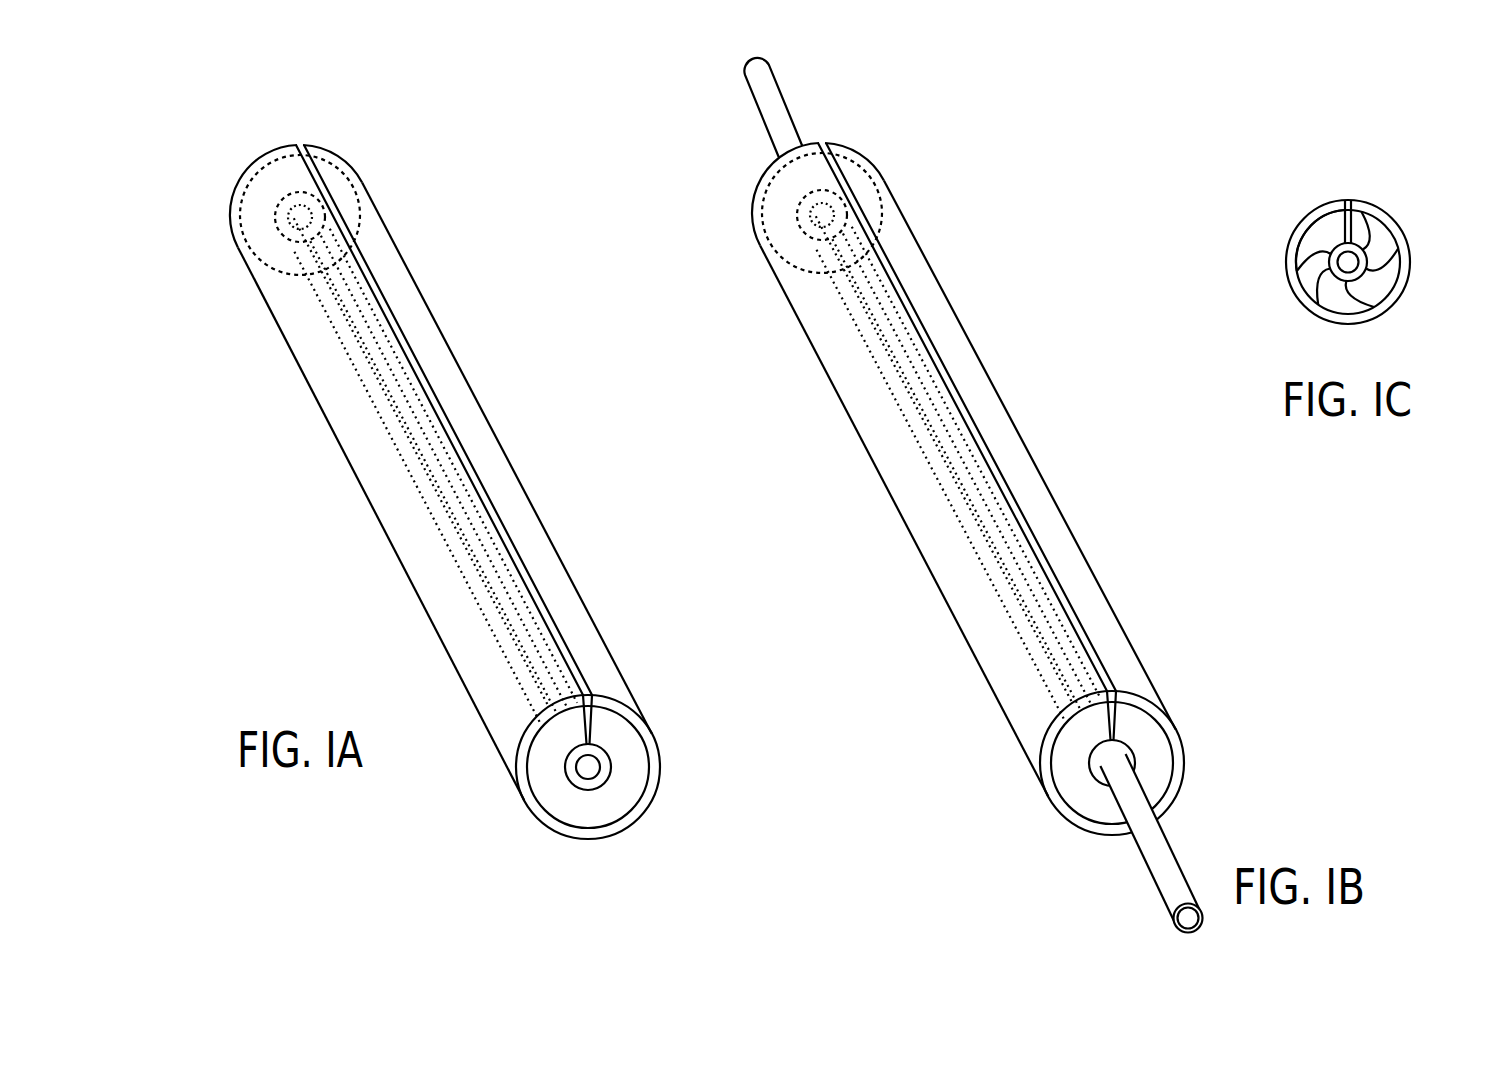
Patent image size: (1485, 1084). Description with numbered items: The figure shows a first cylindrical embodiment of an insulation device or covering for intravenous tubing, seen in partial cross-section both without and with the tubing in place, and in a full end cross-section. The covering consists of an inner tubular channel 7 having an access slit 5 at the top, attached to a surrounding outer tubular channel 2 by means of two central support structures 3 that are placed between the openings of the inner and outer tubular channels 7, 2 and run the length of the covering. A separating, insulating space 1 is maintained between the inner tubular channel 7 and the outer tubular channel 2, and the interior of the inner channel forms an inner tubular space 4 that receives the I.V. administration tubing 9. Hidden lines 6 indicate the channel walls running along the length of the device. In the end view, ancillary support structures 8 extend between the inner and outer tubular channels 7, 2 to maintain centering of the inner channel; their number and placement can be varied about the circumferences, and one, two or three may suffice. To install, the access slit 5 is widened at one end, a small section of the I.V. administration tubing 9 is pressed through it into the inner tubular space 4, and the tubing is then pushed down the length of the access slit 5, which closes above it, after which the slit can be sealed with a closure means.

In FIG. 1A, the separating, insulating space 1 is at (625, 745).
In FIG. 1B, the separating, insulating space 1 is at (1148, 745).
In FIG. 1C, the separating, insulating space 1 is at (1385, 247).
In FIG. 1A, the outer tubular channel 2 is at (398, 245).
In FIG. 1B, the outer tubular channel 2 is at (928, 243).
In FIG. 1C, the outer tubular channel 2 is at (1381, 208).
In FIG. 1A, the central support structures 3 is at (290, 172).
In FIG. 1B, the central support structures 3 is at (815, 168).
In FIG. 1C, the central support structures 3 is at (1338, 226).
In FIG. 1A, the inner tubular space 4 is at (588, 766).
In FIG. 1B, the inner tubular space 4 is at (822, 215).
In FIG. 1C, the inner tubular space 4 is at (1352, 266).
In FIG. 1A, the access slit 5 is at (470, 455).
In FIG. 1B, the access slit 5 is at (995, 452).
In FIG. 1C, the access slit 5 is at (1348, 197).
In FIG. 1A, the inner wall line 6 is at (390, 440).
In FIG. 1B, the inner wall line 6 is at (910, 440).
In FIG. 1A, the inner tubular channel 7 is at (606, 768).
In FIG. 1B, the inner tubular channel 7 is at (1136, 765).
In FIG. 1C, the inner tubular channel 7 is at (1341, 282).
In FIG. 1C, the ancillary support structures 8 is at (1318, 280).
In FIG. 1B, the I.V. administration tubing 9 is at (786, 92).